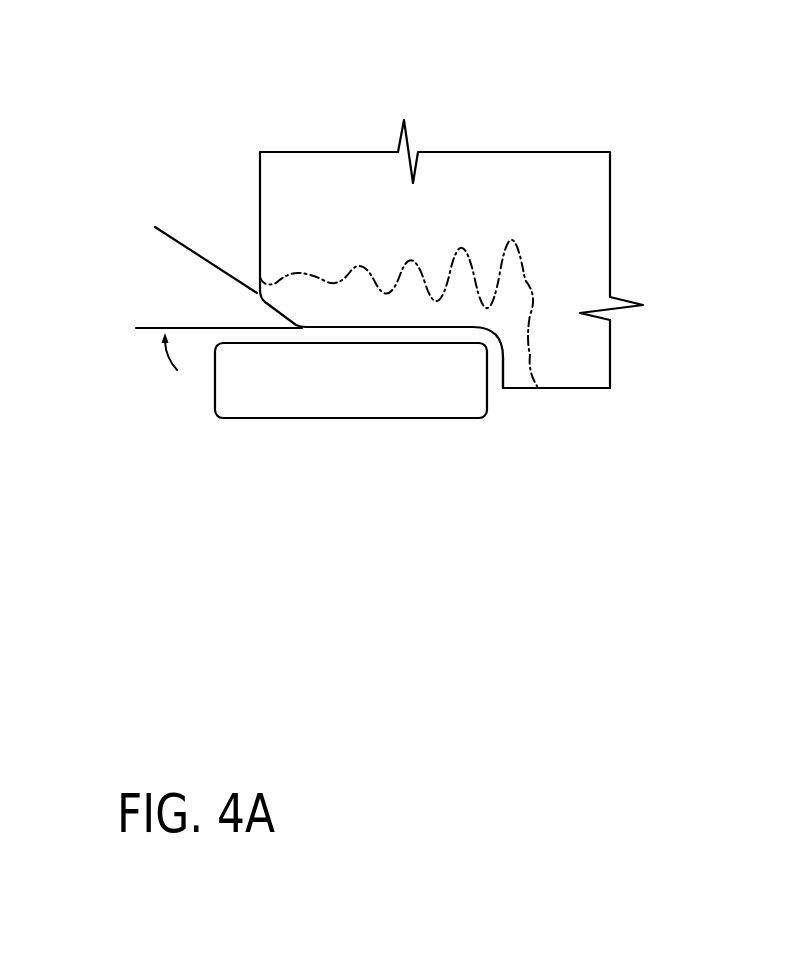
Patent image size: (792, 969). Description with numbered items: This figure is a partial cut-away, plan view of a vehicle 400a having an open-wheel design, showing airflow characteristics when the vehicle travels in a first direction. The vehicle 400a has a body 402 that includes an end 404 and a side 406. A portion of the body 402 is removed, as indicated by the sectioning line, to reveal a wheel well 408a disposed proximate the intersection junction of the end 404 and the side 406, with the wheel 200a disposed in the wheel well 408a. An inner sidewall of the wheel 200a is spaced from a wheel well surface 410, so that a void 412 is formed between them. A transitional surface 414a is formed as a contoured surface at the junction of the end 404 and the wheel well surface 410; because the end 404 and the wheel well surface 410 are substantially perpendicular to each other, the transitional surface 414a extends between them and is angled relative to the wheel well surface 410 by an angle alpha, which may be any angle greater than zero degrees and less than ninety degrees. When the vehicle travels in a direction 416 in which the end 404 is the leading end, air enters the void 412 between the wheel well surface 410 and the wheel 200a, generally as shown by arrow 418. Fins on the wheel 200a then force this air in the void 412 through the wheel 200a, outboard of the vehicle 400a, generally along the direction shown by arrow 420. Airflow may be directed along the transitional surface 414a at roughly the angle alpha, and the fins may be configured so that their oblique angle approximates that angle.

The vehicle 400a is at (597, 83).
The body 402 is at (571, 243).
The end 404 is at (260, 170).
The side 406 is at (563, 388).
The wheel well 408a is at (497, 340).
The wheel well surface 410 is at (383, 327).
The void 412 is at (418, 336).
The transitional surface 414a is at (272, 306).
The direction of travel 416 is at (480, 578).
The arrow indicating air entering void 418 is at (257, 314).
The arrow indicating outboard airflow direction 420 is at (522, 480).
The wheel 200a is at (275, 419).